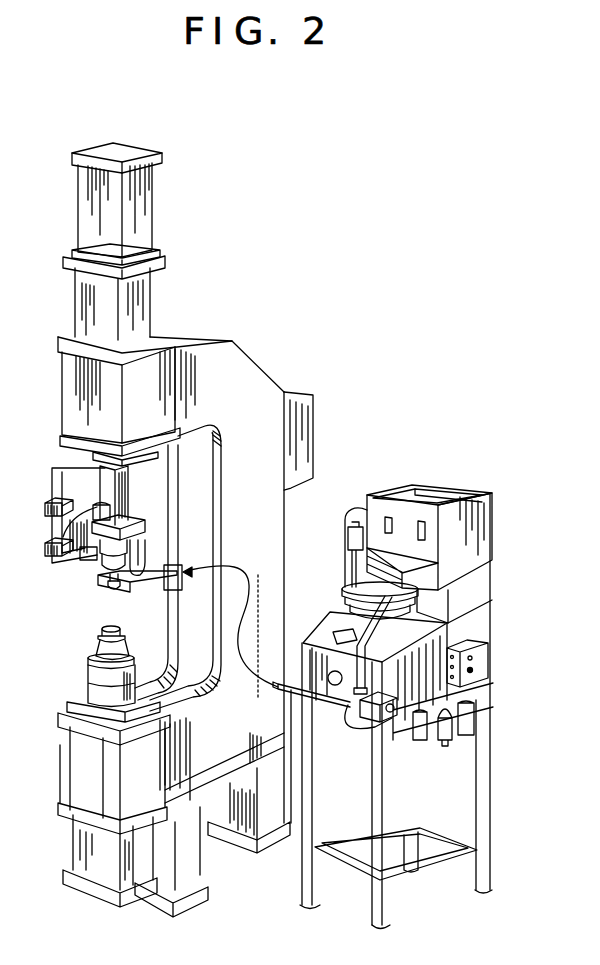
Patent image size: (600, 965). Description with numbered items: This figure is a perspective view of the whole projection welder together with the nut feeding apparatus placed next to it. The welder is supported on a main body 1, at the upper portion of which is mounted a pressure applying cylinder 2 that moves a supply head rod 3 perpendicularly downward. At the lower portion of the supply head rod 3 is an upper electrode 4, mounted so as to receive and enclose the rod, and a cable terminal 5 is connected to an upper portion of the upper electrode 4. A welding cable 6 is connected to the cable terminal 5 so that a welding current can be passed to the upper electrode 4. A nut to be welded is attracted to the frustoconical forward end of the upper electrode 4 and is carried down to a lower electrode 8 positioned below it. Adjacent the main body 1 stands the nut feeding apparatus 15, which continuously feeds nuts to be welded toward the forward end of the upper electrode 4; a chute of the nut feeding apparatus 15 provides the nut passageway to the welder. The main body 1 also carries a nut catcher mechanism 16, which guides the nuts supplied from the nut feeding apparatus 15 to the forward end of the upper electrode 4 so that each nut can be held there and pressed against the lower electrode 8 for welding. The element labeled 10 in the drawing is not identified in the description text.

The main body 1 is at (60, 410).
The pressure applying cylinder 2 is at (158, 209).
The supply head rod 3 is at (100, 472).
The upper electrode 4 is at (105, 560).
The cable terminal 5 is at (130, 528).
The welding cable 6 is at (130, 515).
The lower electrode 8 is at (95, 632).
The nozzle tip 10 is at (108, 590).
The nut feeding apparatus 15 is at (438, 481).
The nut catcher mechanism 16 is at (115, 592).